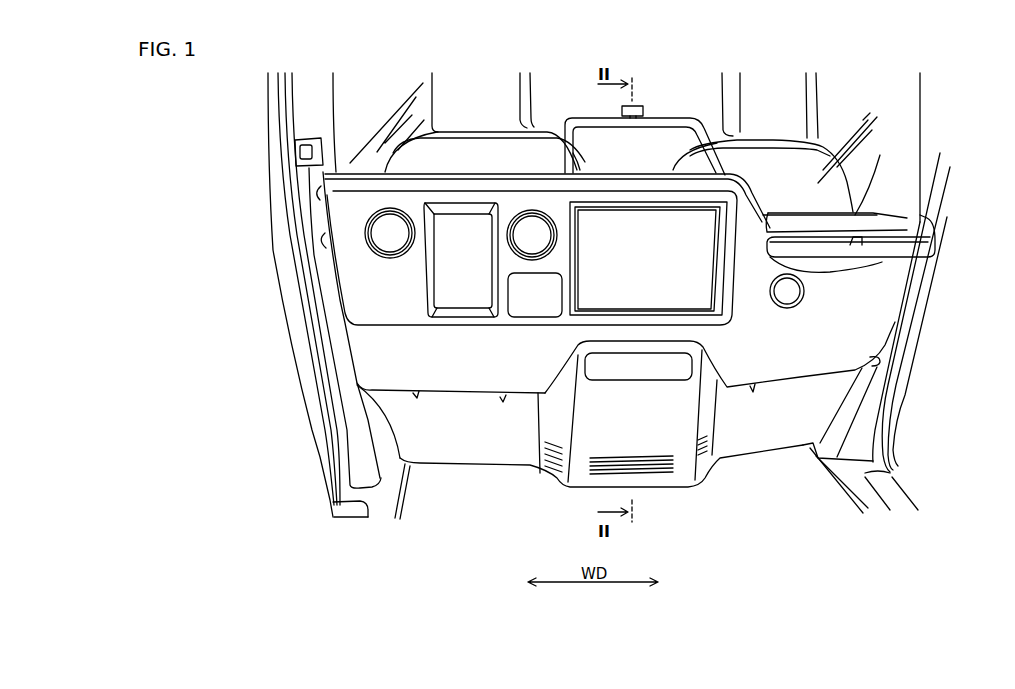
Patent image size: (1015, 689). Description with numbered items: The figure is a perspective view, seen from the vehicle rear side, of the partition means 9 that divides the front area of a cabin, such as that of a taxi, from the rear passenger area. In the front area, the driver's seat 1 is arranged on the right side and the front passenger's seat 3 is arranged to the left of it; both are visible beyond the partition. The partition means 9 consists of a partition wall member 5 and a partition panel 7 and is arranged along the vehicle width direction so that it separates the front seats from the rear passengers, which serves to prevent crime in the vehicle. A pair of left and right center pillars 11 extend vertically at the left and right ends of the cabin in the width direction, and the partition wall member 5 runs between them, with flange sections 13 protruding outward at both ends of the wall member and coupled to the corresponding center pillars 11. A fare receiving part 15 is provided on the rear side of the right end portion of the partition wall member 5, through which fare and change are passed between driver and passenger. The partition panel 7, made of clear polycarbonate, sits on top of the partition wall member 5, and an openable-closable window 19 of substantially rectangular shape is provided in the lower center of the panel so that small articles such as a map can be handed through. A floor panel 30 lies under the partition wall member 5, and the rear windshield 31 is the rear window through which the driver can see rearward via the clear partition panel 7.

The driver's seat 1 is at (776, 142).
The front passenger's seat 3 is at (480, 148).
The partition wall member 5 is at (478, 415).
The partition panel 7 is at (907, 137).
The partition means 9 is at (748, 458).
The center pillar 11 is at (312, 403).
The flange section 13 is at (318, 215).
The fare receiving part 15 is at (828, 258).
The openable-closable window 19 is at (660, 150).
The floor panel 30 is at (425, 477).
The rear windshield 31 is at (325, 97).